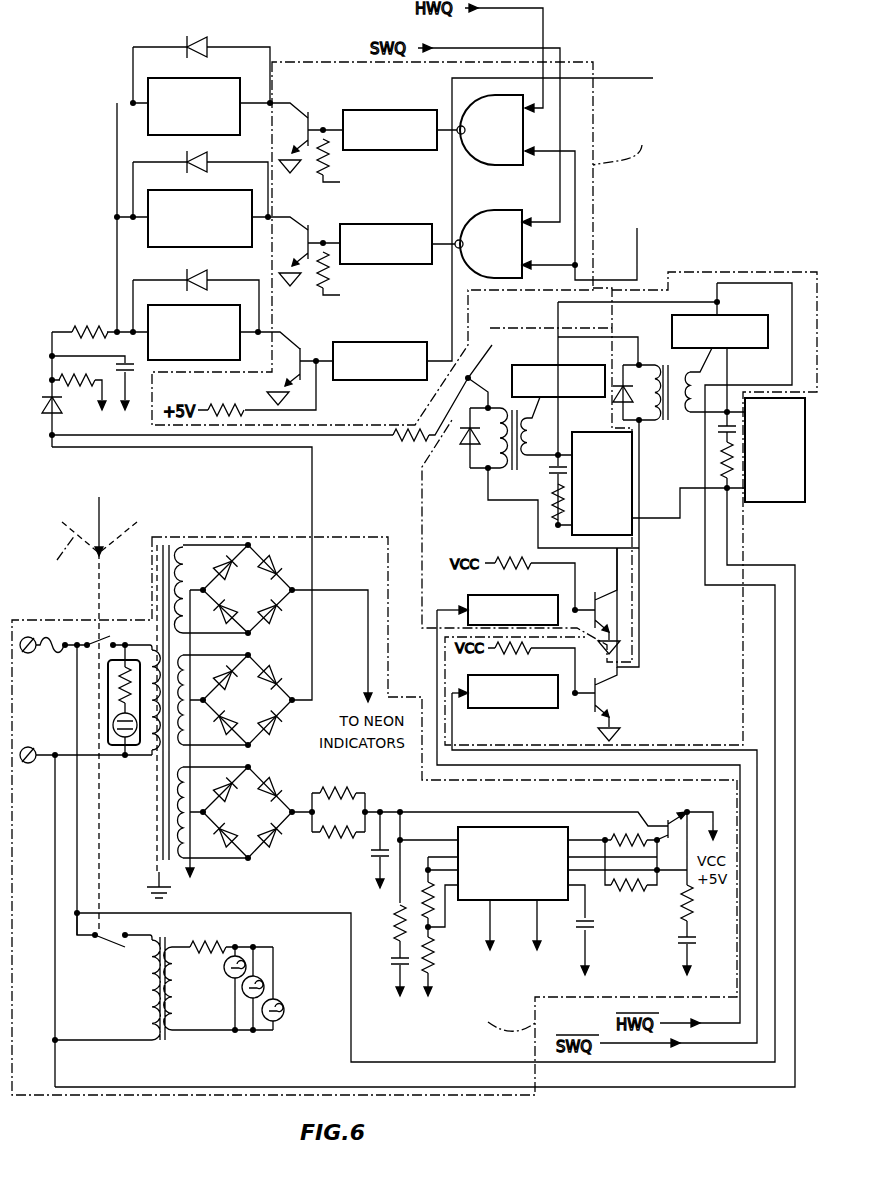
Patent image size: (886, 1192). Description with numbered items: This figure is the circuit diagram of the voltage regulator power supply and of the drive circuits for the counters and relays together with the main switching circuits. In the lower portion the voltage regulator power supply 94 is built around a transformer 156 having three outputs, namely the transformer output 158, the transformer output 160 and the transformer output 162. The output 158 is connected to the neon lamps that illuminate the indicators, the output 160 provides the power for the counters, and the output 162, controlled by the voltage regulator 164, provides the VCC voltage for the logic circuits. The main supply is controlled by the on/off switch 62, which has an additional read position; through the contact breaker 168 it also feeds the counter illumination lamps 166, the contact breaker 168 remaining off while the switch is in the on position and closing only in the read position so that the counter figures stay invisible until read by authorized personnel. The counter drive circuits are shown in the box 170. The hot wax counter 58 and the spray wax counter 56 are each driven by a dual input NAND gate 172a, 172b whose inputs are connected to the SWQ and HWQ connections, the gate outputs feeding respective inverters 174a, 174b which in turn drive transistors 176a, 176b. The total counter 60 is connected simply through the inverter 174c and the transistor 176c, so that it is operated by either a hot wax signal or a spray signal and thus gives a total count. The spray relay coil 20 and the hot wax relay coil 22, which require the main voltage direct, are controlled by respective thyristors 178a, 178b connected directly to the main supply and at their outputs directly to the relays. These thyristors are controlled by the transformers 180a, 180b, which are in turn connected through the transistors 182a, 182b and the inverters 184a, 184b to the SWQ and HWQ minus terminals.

The hot wax counter 58 is at (180, 80).
The spray wax counter 56 is at (175, 192).
The total counter 60 is at (170, 306).
The transistor 176b is at (310, 117).
The transistor 176a is at (310, 232).
The transistor 176c is at (322, 335).
The inverter 174b is at (404, 97).
The inverter 174a is at (372, 224).
The inverter 174c is at (375, 342).
The dual input NAND gate 172b is at (500, 165).
The dual input NAND gate 172a is at (510, 212).
The counter drive circuits box 170 is at (558, 219).
The thyristor 178a is at (725, 319).
The thyristor 178b is at (538, 365).
The transformer 180a is at (658, 368).
The transformer 180b is at (517, 468).
The spray relay coil 20 is at (785, 505).
The hot wax relay coil 22 is at (632, 491).
The transistor 182a is at (598, 693).
The transistor 182b is at (584, 596).
The inverter 184a is at (490, 710).
The inverter 184b is at (476, 595).
The on/off switch 62 is at (90, 704).
The transformer 156 is at (157, 765).
The transformer output 158 is at (291, 600).
The transformer output 160 is at (293, 698).
The transformer output 162 is at (293, 801).
The voltage regulator 164 is at (456, 834).
The counter illumination lamps 166 is at (277, 984).
The contact breaker 168 is at (106, 950).
The voltage regulator power supply 94 is at (474, 1023).